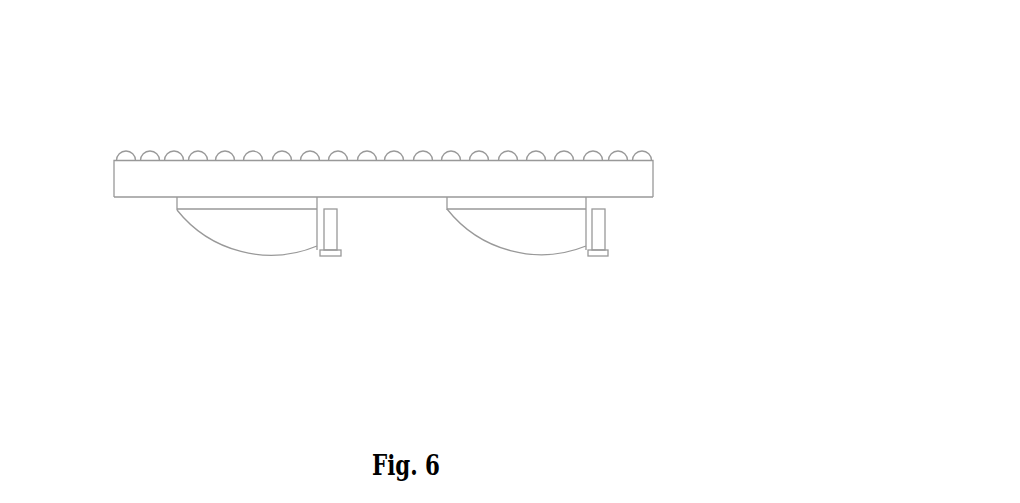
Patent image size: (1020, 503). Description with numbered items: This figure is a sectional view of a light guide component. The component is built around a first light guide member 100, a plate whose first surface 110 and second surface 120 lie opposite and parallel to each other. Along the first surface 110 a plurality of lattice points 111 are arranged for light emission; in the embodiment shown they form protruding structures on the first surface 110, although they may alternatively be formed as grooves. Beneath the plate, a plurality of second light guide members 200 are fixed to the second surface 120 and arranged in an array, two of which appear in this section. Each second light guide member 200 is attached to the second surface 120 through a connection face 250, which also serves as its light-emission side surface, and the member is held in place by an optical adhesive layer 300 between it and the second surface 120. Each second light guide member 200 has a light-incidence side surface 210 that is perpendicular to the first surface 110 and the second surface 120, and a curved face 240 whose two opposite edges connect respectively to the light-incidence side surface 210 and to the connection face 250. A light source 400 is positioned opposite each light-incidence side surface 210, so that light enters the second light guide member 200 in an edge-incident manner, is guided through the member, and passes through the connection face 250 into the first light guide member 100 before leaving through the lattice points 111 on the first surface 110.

The first light guide member 100 is at (440, 153).
The first surface 110 is at (384, 91).
The lattice points 111 is at (393, 157).
The second surface 120 is at (629, 200).
The second light guide member 200 is at (319, 293).
The light-incidence side surface 210 is at (316, 228).
The curved face 240 is at (197, 229).
The connection face 250 is at (253, 211).
The optical adhesive layer 300 is at (184, 204).
The light source 400 is at (332, 225).